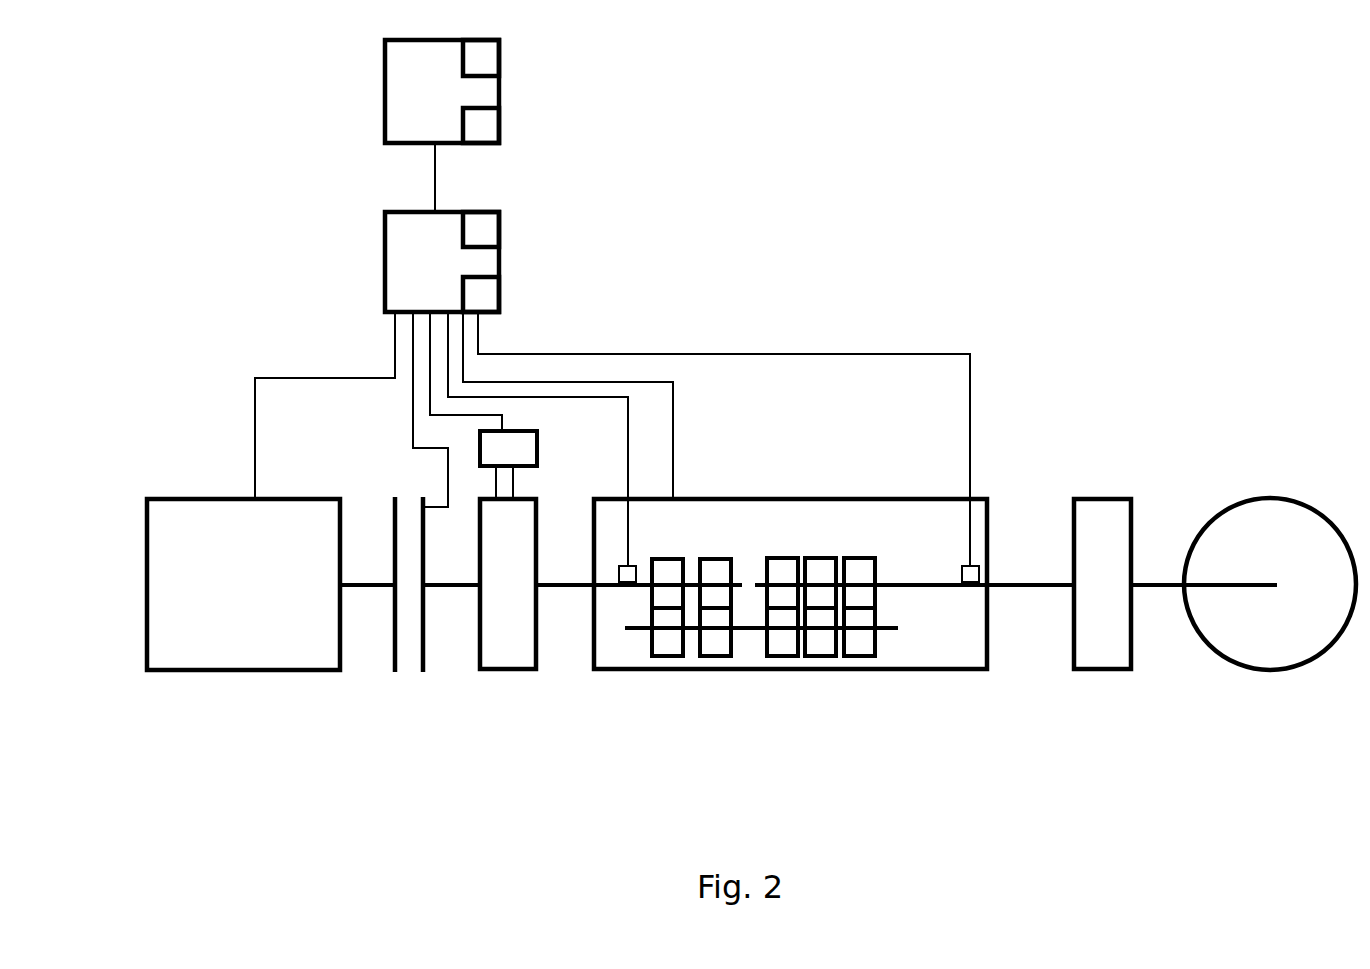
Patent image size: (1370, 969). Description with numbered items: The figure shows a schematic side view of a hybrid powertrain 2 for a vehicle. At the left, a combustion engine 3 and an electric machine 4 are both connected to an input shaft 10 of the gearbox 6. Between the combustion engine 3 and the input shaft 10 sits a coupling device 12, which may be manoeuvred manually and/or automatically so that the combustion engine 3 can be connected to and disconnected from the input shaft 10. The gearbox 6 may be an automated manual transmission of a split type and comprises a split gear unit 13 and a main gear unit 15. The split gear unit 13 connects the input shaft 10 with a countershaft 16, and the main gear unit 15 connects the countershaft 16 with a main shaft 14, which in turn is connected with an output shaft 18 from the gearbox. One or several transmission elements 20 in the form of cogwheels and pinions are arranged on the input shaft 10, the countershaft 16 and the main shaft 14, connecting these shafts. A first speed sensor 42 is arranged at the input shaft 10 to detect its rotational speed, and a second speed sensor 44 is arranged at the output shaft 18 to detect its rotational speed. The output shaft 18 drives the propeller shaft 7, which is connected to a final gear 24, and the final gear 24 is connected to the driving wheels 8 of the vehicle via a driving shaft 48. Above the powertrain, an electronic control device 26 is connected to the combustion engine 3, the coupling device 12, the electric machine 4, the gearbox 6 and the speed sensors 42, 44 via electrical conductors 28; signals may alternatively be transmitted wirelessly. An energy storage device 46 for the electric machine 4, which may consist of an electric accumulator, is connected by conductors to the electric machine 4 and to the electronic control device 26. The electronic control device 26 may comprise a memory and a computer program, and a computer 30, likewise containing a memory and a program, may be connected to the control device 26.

The hybrid powertrain 2 is at (773, 312).
The combustion engine 3 is at (277, 673).
The electric machine 4 is at (512, 672).
The gearbox 6 is at (652, 658).
The propeller shaft 7 is at (1052, 588).
The driving wheels 8 is at (1277, 673).
The input shaft 10 is at (575, 590).
The coupling device 12 is at (427, 643).
The split gear unit 13 is at (700, 690).
The main shaft 14 is at (903, 590).
The main gear unit 15 is at (830, 674).
The countershaft 16 is at (637, 633).
The output shaft 18 is at (1020, 573).
The transmission elements 20 is at (875, 640).
The final gear 24 is at (1103, 672).
The electronic control device 26 is at (383, 245).
The electrical conductors 28 is at (283, 378).
The computer 30 is at (383, 100).
The first speed sensor 42 is at (618, 575).
The second speed sensor 44 is at (970, 588).
The energy storage device 46 is at (538, 447).
The driving shaft 48 is at (1150, 577).